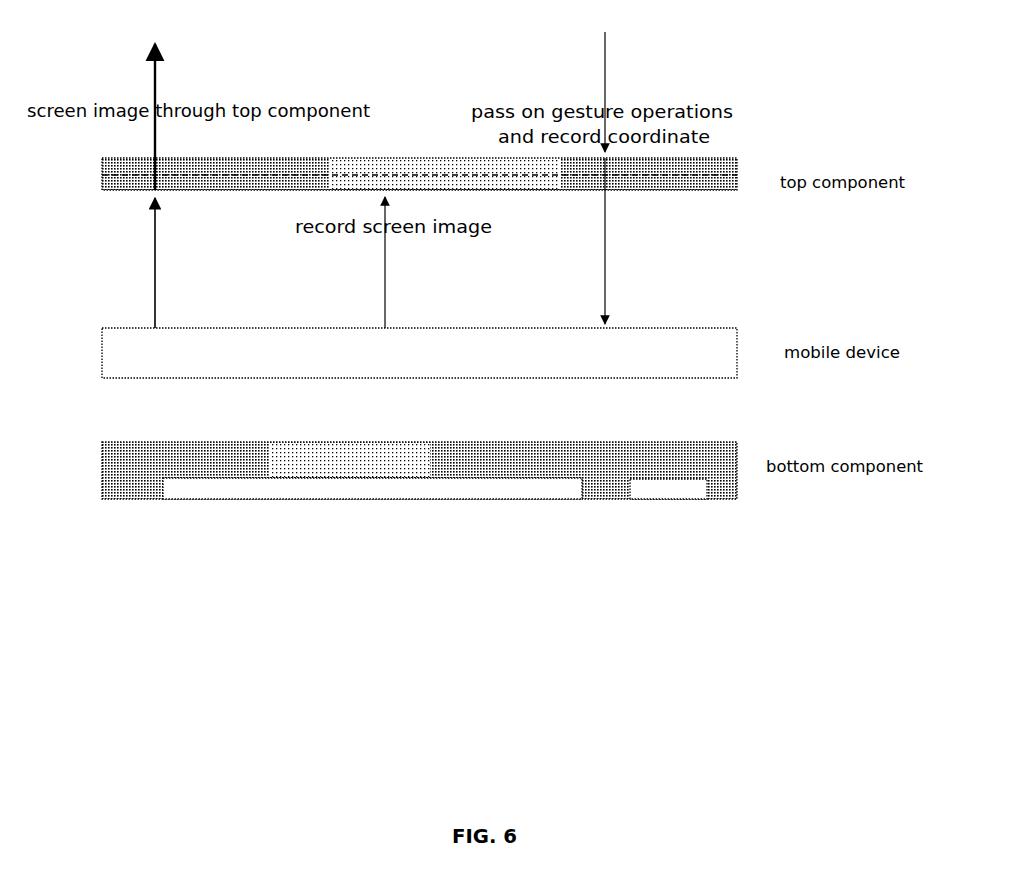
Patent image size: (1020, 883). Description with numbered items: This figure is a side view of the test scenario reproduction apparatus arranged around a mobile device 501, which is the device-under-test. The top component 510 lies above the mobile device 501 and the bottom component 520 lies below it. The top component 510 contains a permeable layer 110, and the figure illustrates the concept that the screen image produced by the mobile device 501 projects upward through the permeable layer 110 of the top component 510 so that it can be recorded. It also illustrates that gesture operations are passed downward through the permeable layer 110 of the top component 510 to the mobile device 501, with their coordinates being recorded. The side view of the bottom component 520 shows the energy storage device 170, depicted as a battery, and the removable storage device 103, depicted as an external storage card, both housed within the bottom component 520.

The top component 510 is at (395, 158).
The permeable layer 110 is at (262, 176).
The mobile device 501 is at (685, 328).
The bottom component 520 is at (470, 442).
The energy storage device 170 is at (467, 492).
The removable storage device 103 is at (672, 490).